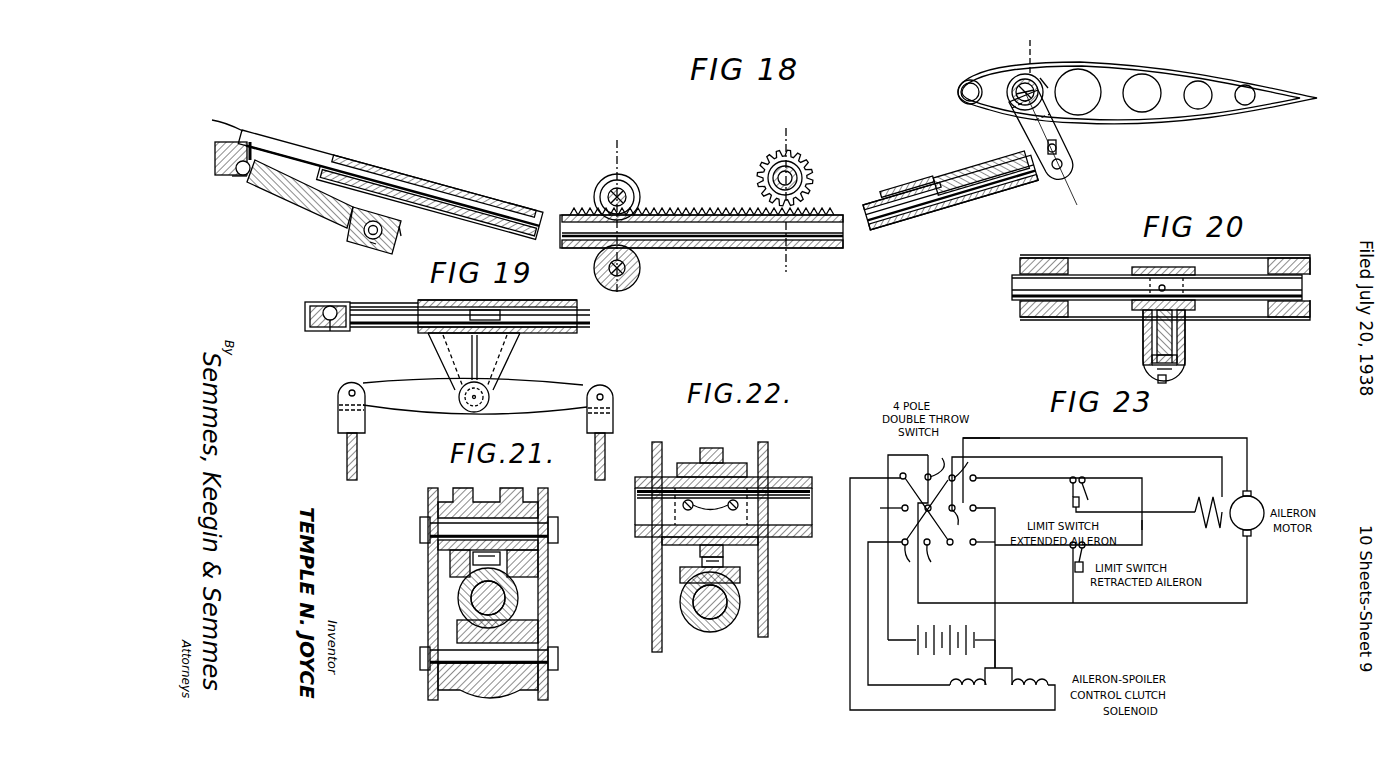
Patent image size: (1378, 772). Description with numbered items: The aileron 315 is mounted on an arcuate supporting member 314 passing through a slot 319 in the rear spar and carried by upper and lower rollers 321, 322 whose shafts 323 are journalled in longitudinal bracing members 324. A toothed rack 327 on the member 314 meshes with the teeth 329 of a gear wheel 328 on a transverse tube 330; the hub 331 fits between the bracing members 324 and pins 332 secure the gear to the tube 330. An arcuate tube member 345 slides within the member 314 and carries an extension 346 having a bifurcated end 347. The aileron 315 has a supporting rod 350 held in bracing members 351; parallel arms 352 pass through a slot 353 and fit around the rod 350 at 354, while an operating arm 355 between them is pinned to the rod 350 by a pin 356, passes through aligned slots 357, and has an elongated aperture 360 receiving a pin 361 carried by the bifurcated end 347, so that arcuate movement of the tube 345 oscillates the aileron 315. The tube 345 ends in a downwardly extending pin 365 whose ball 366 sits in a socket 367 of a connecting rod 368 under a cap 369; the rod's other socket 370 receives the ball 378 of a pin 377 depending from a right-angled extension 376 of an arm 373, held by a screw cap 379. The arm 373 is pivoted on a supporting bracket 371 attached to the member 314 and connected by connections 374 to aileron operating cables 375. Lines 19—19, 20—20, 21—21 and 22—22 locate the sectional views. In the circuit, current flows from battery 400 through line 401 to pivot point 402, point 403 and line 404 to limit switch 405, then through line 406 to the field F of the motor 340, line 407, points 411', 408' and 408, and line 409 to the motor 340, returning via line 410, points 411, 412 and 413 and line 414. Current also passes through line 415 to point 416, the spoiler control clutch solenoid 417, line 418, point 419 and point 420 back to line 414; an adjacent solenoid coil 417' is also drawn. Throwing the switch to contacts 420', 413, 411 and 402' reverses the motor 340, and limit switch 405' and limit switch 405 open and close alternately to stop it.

In FIG. 18, the line 19— 19 is at (214, 118).
In FIG. 18, the line 20— 20 is at (1034, 40).
In FIG. 18, the line 21— 21 is at (611, 148).
In FIG. 18, the line 22— 22 is at (782, 131).
In FIG. 18, the arcuate supporting member 314 is at (692, 247).
In FIG. 19, the arcuate supporting member 314 is at (455, 300).
In FIG. 22, the arcuate supporting member 314 is at (703, 630).
In FIG. 18, the aileron 315 is at (1196, 64).
In FIG. 20, the aileron 315 is at (1104, 256).
In FIG. 18, the slot 319 is at (366, 163).
In FIG. 21, the slot 319 is at (460, 592).
In FIG. 20, the slot 319 is at (1178, 366).
In FIG. 18, the upper roller 321 is at (628, 187).
In FIG. 21, the upper roller 321 is at (485, 508).
In FIG. 18, the lower roller 322 is at (636, 279).
In FIG. 21, the lower roller 322 is at (493, 692).
In FIG. 18, the shafts 323 is at (604, 196).
In FIG. 21, the shafts 323 is at (430, 531).
In FIG. 21, the longitudinal bracing members 324 is at (430, 603).
In FIG. 22, the longitudinal bracing members 324 is at (652, 599).
In FIG. 18, the toothed rack 327 is at (721, 208).
In FIG. 21, the toothed rack 327 is at (500, 558).
In FIG. 22, the toothed rack 327 is at (702, 562).
In FIG. 18, the gear wheel 328 is at (808, 173).
In FIG. 22, the gear wheel 328 is at (716, 463).
In FIG. 18, the teeth 329 is at (803, 162).
In FIG. 22, the teeth 329 is at (728, 448).
In FIG. 18, the tube 330 is at (774, 180).
In FIG. 22, the tube 330 is at (790, 478).
In FIG. 22, the hub 331 is at (688, 463).
In FIG. 22, the pins 332 is at (738, 507).
In FIG. 23, the motor 340 is at (1258, 500).
In FIG. 18, the arcuate tube member 345 is at (430, 192).
In FIG. 19, the arcuate tube member 345 is at (592, 320).
In FIG. 21, the arcuate tube member 345 is at (510, 612).
In FIG. 22, the arcuate tube member 345 is at (722, 609).
In FIG. 18, the extension 346 is at (1018, 174).
In FIG. 20, the extension 346 is at (1183, 363).
In FIG. 18, the bifurcated end 347 is at (1080, 154).
In FIG. 18, the supporting rod 350 is at (1022, 77).
In FIG. 20, the supporting rod 350 is at (1250, 282).
In FIG. 20, the bracing members 351 is at (1190, 270).
In FIG. 18, the parallel arms 352 is at (1022, 139).
In FIG. 20, the parallel arms 352 is at (1152, 343).
In FIG. 20, the slot 353 is at (1141, 322).
In FIG. 20, the fitting around the tube 354 is at (1143, 267).
In FIG. 18, the operating arm 355 is at (1070, 130).
In FIG. 20, the operating arm 355 is at (1152, 360).
In FIG. 18, the pin 356 is at (1062, 72).
In FIG. 20, the pin 356 is at (1165, 285).
In FIG. 20, the aligned slots 357 is at (1157, 372).
In FIG. 18, the elongated aperture 360 is at (1057, 171).
In FIG. 20, the elongated aperture 360 is at (1162, 383).
In FIG. 18, the pin 361 is at (1068, 166).
In FIG. 20, the pin 361 is at (1182, 358).
In FIG. 18, the downwardly extending pin 365 is at (253, 150).
In FIG. 18, the ball 366 is at (244, 176).
In FIG. 19, the ball 366 is at (328, 304).
In FIG. 18, the socket 367 is at (233, 177).
In FIG. 19, the socket 367 is at (331, 332).
In FIG. 18, the connecting rod 368 is at (309, 198).
In FIG. 19, the connecting rod 368 is at (398, 303).
In FIG. 18, the cap 369 is at (216, 154).
In FIG. 19, the cap 369 is at (306, 318).
In FIG. 18, the socket 370 is at (360, 235).
In FIG. 19, the supporting bracket 371 is at (510, 352).
In FIG. 19, the arm 373 is at (427, 409).
In FIG. 19, the connections 374 is at (338, 420).
In FIG. 19, the aileron operating cables 375 is at (347, 460).
In FIG. 19, the right angled extension 376 is at (452, 358).
In FIG. 18, the pin 377 is at (397, 245).
In FIG. 18, the ball 378 is at (373, 246).
In FIG. 19, the ball 378 is at (385, 300).
In FIG. 18, the screw cap 379 is at (400, 231).
In FIG. 23, the battery 400 is at (945, 648).
In FIG. 23, the line 401 is at (996, 588).
In FIG. 23, the pivot point 402 is at (990, 519).
In FIG. 23, the contact 402' is at (1056, 505).
In FIG. 23, the point 403 is at (981, 554).
In FIG. 23, the line 404 is at (1060, 545).
In FIG. 23, the limit switch 405 is at (1065, 567).
In FIG. 23, the limit switch 405' is at (1132, 494).
In FIG. 23, the line 406 is at (1142, 541).
In FIG. 23, the line 407 is at (1138, 460).
In FIG. 23, the point 408 is at (925, 509).
In FIG. 23, the point 408' is at (930, 567).
In FIG. 23, the line 409 is at (918, 580).
In FIG. 23, the line 410 is at (1210, 438).
In FIG. 23, the point 411 is at (966, 520).
In FIG. 23, the point 411' is at (978, 463).
In FIG. 23, the point 412 is at (944, 552).
In FIG. 23, the point 413 is at (914, 470).
In FIG. 23, the line 414 is at (905, 552).
In FIG. 23, the line 415 is at (996, 656).
In FIG. 23, the point 416 is at (1000, 673).
In FIG. 23, the spoiler control clutch solenoid 417 is at (969, 697).
In FIG. 23, the solenoid coil 417' is at (1030, 697).
In FIG. 23, the line 418 is at (952, 594).
In FIG. 23, the point 419 is at (909, 605).
In FIG. 23, the point 420 is at (882, 505).
In FIG. 23, the contact 420' is at (944, 459).
In FIG. 23, the field F is at (1208, 504).